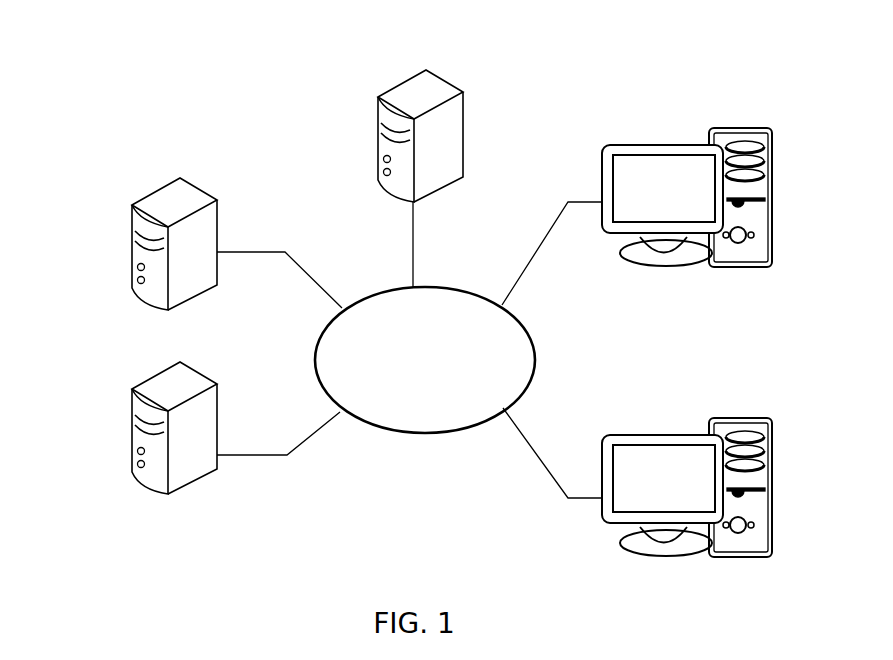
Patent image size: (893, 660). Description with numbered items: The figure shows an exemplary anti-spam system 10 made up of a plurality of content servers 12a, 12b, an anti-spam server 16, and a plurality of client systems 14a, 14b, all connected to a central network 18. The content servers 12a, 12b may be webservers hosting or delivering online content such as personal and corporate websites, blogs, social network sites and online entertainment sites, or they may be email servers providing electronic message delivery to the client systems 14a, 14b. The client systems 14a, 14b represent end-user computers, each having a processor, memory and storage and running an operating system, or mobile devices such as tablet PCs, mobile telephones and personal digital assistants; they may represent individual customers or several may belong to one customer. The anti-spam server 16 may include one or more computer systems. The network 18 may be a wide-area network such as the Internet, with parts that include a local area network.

The anti-spam system 10 is at (244, 108).
The content server 12a is at (132, 216).
The content server 12b is at (132, 397).
The client system 14a is at (771, 272).
The client system 14b is at (772, 560).
The anti-spam server 16 is at (465, 116).
The network 18 is at (420, 437).